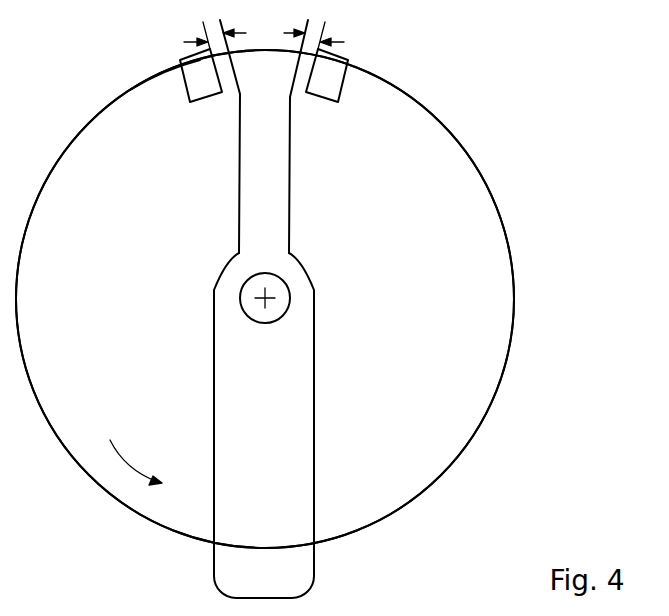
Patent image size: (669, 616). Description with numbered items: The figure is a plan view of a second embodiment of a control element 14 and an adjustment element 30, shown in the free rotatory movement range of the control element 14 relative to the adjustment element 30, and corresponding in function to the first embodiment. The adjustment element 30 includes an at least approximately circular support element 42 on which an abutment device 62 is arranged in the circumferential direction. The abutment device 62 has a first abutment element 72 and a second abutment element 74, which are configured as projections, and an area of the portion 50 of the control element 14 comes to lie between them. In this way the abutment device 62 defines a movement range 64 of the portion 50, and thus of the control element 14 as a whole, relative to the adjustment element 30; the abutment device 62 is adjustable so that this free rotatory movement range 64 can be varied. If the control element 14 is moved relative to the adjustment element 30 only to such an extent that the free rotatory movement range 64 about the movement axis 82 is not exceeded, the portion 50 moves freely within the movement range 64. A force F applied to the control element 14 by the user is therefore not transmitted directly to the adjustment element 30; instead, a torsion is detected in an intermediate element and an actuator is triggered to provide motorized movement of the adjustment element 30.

The control element 14 is at (333, 424).
The adjustment element 30 is at (515, 123).
The support element 42 is at (500, 294).
The portion 50 is at (270, 110).
The abutment device 62 is at (152, 68).
The movement range 64 is at (346, 31).
The first abutment element 72 is at (329, 67).
The second abutment element 74 is at (192, 66).
The movement axis 82 is at (268, 292).
The force F is at (128, 450).